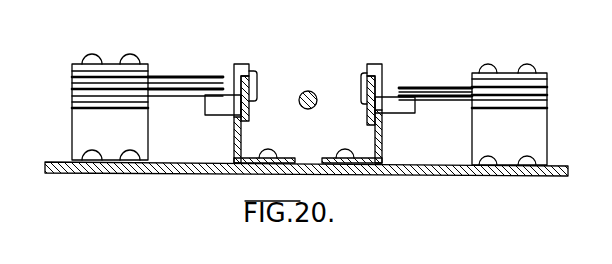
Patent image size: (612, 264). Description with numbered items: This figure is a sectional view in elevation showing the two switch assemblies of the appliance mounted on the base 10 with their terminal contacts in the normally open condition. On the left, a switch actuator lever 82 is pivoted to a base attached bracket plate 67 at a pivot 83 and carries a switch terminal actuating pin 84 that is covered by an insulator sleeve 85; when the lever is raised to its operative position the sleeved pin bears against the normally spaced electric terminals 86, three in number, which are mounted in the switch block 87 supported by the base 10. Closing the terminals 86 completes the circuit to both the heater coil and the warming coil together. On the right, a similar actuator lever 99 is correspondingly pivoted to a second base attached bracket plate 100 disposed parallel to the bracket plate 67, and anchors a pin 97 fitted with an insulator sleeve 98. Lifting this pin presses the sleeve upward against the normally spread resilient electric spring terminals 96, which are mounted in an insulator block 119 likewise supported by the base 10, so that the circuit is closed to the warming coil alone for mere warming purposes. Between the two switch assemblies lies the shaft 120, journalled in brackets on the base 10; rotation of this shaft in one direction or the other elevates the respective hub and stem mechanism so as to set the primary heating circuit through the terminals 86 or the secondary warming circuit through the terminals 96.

The base 10 is at (508, 175).
The switch block 87 is at (72, 89).
The electric terminals 86 is at (222, 76).
The insulator sleeve 85 is at (216, 116).
The switch actuator lever 82 is at (252, 66).
The pivot 83 is at (250, 86).
The switch terminal actuating pin 84 is at (256, 98).
The bracket plate 67 is at (232, 142).
The shaft 120 is at (314, 91).
The actuator lever 99 is at (370, 67).
The pin 97 is at (366, 112).
The insulator sleeve 98 is at (406, 113).
The electric spring terminals 96 is at (399, 87).
The bracket plate 100 is at (382, 135).
The insulator block 119 is at (547, 82).